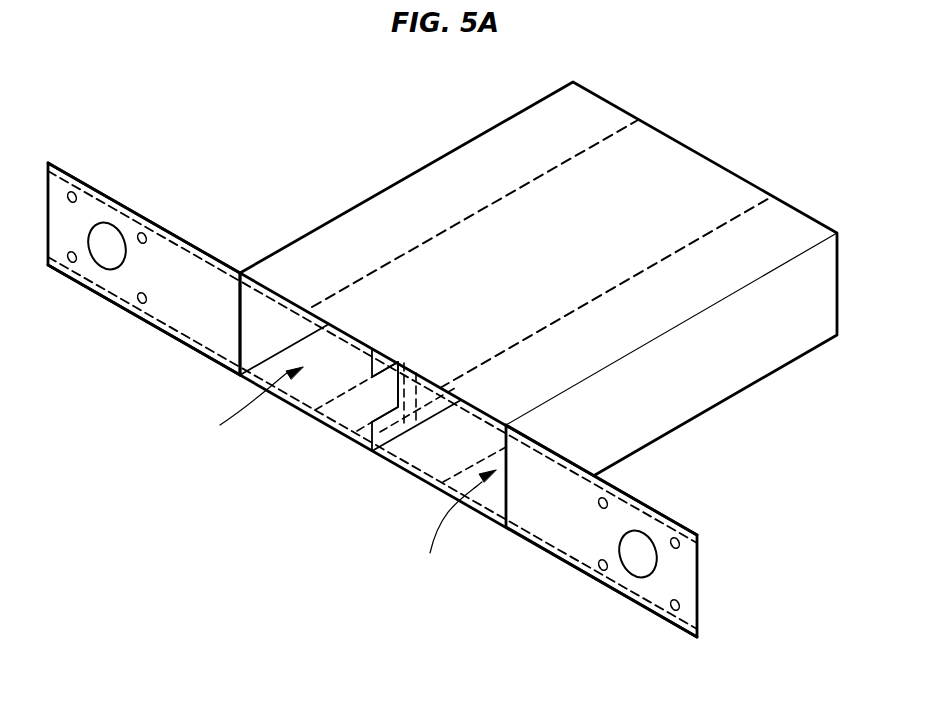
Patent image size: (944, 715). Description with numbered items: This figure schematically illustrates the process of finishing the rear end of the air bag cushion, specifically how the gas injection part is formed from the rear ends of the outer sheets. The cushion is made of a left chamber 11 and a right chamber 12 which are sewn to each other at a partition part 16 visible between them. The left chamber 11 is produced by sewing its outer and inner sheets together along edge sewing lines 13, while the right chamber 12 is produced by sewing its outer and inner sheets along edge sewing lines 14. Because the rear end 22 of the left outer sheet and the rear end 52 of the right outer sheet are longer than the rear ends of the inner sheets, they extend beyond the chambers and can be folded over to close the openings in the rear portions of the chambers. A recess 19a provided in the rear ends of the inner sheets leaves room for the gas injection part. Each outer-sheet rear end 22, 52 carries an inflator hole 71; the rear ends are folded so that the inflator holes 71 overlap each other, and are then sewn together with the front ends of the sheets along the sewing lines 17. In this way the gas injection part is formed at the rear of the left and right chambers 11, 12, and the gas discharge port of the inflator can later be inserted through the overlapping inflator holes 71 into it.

The inflator hole 71 is at (103, 237).
The sewing line 17 is at (172, 238).
The rear end of right outer sheet 52 is at (172, 308).
The rear end of left outer sheet 22 is at (573, 537).
The edge sewing line 14 is at (510, 192).
The edge sewing line 13 is at (738, 215).
The right chamber 12 is at (240, 410).
The left chamber 11 is at (450, 517).
The recess 19a is at (387, 393).
The partition part 16 is at (418, 404).